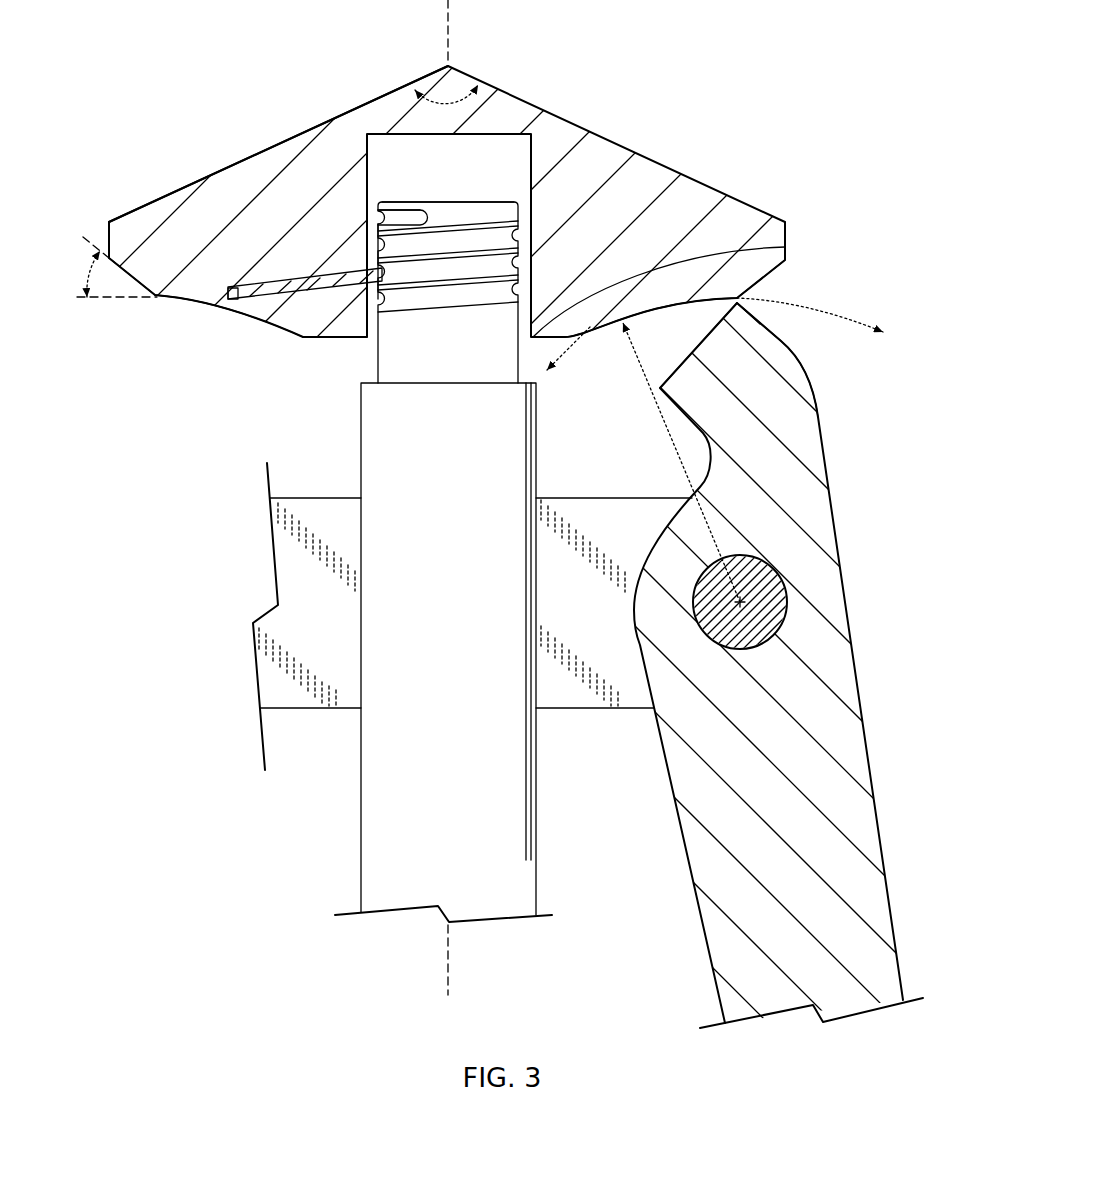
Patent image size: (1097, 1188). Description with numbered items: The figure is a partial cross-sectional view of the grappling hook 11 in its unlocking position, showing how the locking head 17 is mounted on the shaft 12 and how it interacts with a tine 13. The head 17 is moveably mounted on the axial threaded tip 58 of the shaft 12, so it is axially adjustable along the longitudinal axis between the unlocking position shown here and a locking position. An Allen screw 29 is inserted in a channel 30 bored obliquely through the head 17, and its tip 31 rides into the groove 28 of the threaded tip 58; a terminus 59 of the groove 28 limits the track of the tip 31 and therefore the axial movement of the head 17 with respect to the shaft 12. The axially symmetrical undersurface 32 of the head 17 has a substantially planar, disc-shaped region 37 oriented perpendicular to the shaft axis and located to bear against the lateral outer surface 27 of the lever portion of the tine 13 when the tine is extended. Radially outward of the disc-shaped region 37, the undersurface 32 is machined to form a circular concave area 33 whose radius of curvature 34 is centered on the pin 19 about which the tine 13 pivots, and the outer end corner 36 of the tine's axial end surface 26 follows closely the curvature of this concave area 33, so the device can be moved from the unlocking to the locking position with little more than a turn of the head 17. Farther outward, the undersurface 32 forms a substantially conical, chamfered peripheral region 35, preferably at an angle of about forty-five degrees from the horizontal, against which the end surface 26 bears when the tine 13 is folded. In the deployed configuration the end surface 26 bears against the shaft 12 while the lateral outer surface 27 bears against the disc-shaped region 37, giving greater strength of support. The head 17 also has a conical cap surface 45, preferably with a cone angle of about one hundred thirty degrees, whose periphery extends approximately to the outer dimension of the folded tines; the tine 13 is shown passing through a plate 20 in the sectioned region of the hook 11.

The fastening assembly 11 is at (789, 100).
The shaft 12 is at (536, 796).
The tine 13 is at (862, 735).
The locking head 17 is at (648, 173).
The pin 19 is at (756, 558).
The plate 20 is at (592, 710).
The axial end surface 26 is at (705, 340).
The lateral outer surface 27 is at (760, 320).
The groove 28 is at (517, 233).
The Allen screw 29 is at (298, 285).
The channel 30 is at (215, 297).
The tip 31 is at (383, 273).
The undersurface 32 is at (655, 268).
The circular concave area 33 is at (258, 317).
The radius of curvature 34 is at (660, 436).
The chamfered peripheral region 35 is at (783, 280).
The outer end corner 36 is at (740, 312).
The disc-shaped region 37 is at (337, 340).
The conical cap surface 45 is at (290, 137).
The axial threaded tip 58 is at (487, 202).
The terminus 59 is at (427, 213).